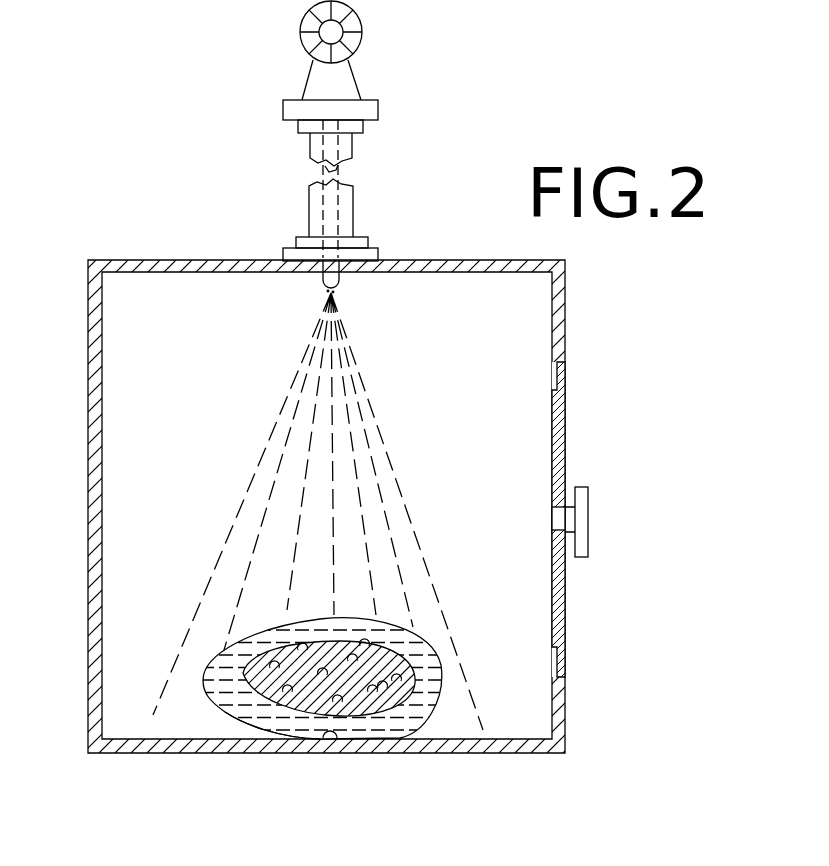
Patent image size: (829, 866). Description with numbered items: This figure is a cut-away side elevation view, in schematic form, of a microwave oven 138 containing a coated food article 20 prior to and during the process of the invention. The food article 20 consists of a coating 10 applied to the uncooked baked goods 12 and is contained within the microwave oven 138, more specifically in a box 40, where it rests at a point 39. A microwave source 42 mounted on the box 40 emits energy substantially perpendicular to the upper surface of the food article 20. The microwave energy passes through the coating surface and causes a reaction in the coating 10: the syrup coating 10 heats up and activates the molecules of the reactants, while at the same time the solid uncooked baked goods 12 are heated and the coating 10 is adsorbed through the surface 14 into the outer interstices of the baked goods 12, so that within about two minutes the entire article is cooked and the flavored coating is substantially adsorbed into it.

The coating 10 is at (423, 672).
The uncooked baked goods 12 is at (383, 695).
The surface 14 is at (237, 697).
The food article 20 is at (208, 645).
The point 39 is at (332, 738).
The box 40 is at (96, 370).
The microwave source 42 is at (290, 218).
The microwave oven 138 is at (583, 735).